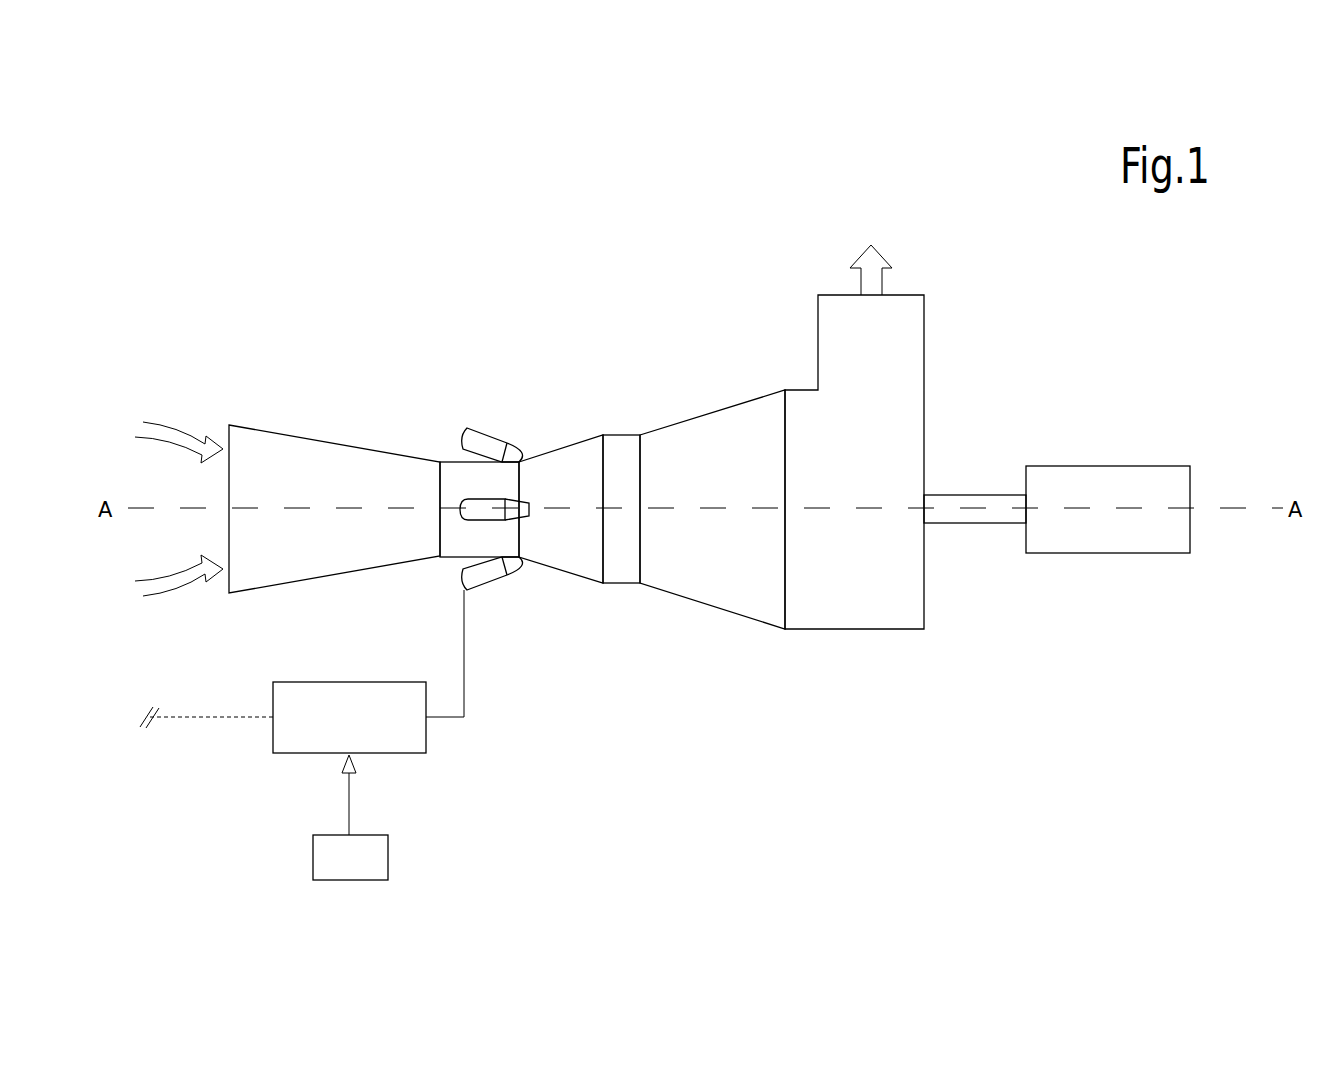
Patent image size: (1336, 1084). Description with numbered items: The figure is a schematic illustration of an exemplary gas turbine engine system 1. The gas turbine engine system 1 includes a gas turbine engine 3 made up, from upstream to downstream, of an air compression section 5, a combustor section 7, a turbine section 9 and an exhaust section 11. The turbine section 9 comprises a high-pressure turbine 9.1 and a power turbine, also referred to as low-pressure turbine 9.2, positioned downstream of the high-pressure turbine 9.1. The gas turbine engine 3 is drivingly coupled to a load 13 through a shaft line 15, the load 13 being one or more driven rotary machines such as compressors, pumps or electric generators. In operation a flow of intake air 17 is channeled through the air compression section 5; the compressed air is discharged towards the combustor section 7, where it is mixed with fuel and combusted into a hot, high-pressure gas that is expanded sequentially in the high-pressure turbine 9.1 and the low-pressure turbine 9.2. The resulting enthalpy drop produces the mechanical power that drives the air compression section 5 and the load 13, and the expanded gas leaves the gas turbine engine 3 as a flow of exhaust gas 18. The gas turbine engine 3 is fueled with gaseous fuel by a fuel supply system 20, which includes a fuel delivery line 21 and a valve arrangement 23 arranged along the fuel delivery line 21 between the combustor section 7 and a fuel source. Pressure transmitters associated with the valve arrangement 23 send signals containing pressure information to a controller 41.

The gas turbine engine system 1 is at (612, 163).
The gas turbine engine 3 is at (957, 245).
The air compression section 5 is at (441, 336).
The combustor section 7 is at (530, 336).
The turbine section 9 is at (793, 338).
The high-pressure turbine 9.1 is at (561, 509).
The low-pressure turbine 9.2 is at (712, 509).
The exhaust section 11 is at (929, 673).
The load 13 is at (1080, 476).
The shaft line 15 is at (961, 505).
The flow of intake air 17 is at (166, 436).
The flow of exhaust gas 18 is at (862, 281).
The fuel supply system 20 is at (590, 682).
The fuel delivery line 21 is at (464, 660).
The valve arrangement 23 is at (283, 717).
The controller 41 is at (370, 872).